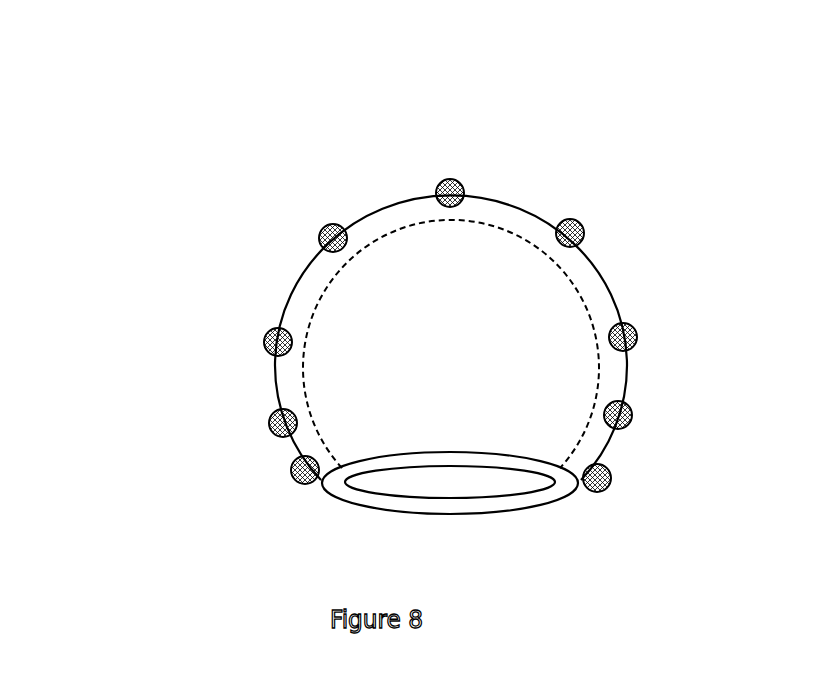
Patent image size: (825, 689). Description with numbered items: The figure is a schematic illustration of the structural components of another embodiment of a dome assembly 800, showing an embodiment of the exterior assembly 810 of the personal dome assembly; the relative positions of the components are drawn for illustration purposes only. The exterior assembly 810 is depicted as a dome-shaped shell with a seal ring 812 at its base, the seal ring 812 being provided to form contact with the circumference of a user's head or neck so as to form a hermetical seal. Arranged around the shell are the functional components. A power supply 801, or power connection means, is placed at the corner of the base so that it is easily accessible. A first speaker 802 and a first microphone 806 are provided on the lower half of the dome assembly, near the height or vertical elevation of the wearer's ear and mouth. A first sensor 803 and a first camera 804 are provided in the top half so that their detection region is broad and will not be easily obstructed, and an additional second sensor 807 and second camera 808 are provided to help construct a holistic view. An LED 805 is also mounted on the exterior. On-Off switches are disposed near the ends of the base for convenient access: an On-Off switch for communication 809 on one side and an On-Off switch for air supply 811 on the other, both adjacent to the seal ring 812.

The dome assembly 800 is at (528, 115).
The exterior assembly 810 is at (333, 139).
The power supply 801 is at (626, 402).
The first speaker 802 is at (629, 322).
The first sensor 803 is at (574, 220).
The first camera 804 is at (456, 180).
The LED 805 is at (282, 410).
The first microphone 806 is at (268, 333).
The second sensor 807 is at (322, 232).
The second camera 808 is at (343, 226).
The On-Off switch for communication 809 is at (297, 482).
The On-Off switch for air supply 811 is at (612, 478).
The seal ring 812 is at (380, 503).